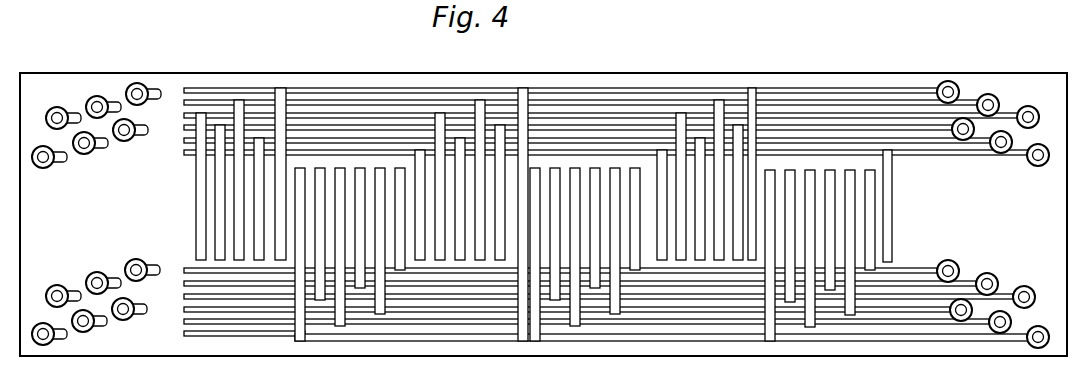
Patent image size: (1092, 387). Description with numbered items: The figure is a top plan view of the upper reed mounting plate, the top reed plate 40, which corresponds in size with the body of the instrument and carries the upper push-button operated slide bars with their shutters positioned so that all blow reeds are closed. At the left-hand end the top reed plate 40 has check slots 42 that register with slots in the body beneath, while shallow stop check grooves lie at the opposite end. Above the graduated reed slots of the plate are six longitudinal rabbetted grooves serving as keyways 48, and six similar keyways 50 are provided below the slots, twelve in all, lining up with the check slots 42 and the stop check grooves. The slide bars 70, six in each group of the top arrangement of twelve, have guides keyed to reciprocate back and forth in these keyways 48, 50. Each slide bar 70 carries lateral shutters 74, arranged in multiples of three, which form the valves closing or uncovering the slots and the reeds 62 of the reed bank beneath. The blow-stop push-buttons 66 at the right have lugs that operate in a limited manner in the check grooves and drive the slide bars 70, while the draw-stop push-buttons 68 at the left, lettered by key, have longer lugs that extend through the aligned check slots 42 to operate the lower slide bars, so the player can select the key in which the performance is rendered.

The top reed plate 40 is at (607, 78).
The check slots 42 is at (159, 91).
The keyways 48 is at (233, 90).
The keyways 50 is at (223, 322).
The reeds 62 is at (1000, 330).
The push-buttons (blow stops) 66 is at (990, 97).
The push-buttons (draw stops) 68 is at (97, 105).
The slide bars 70 is at (806, 105).
The shutters 74 is at (284, 93).